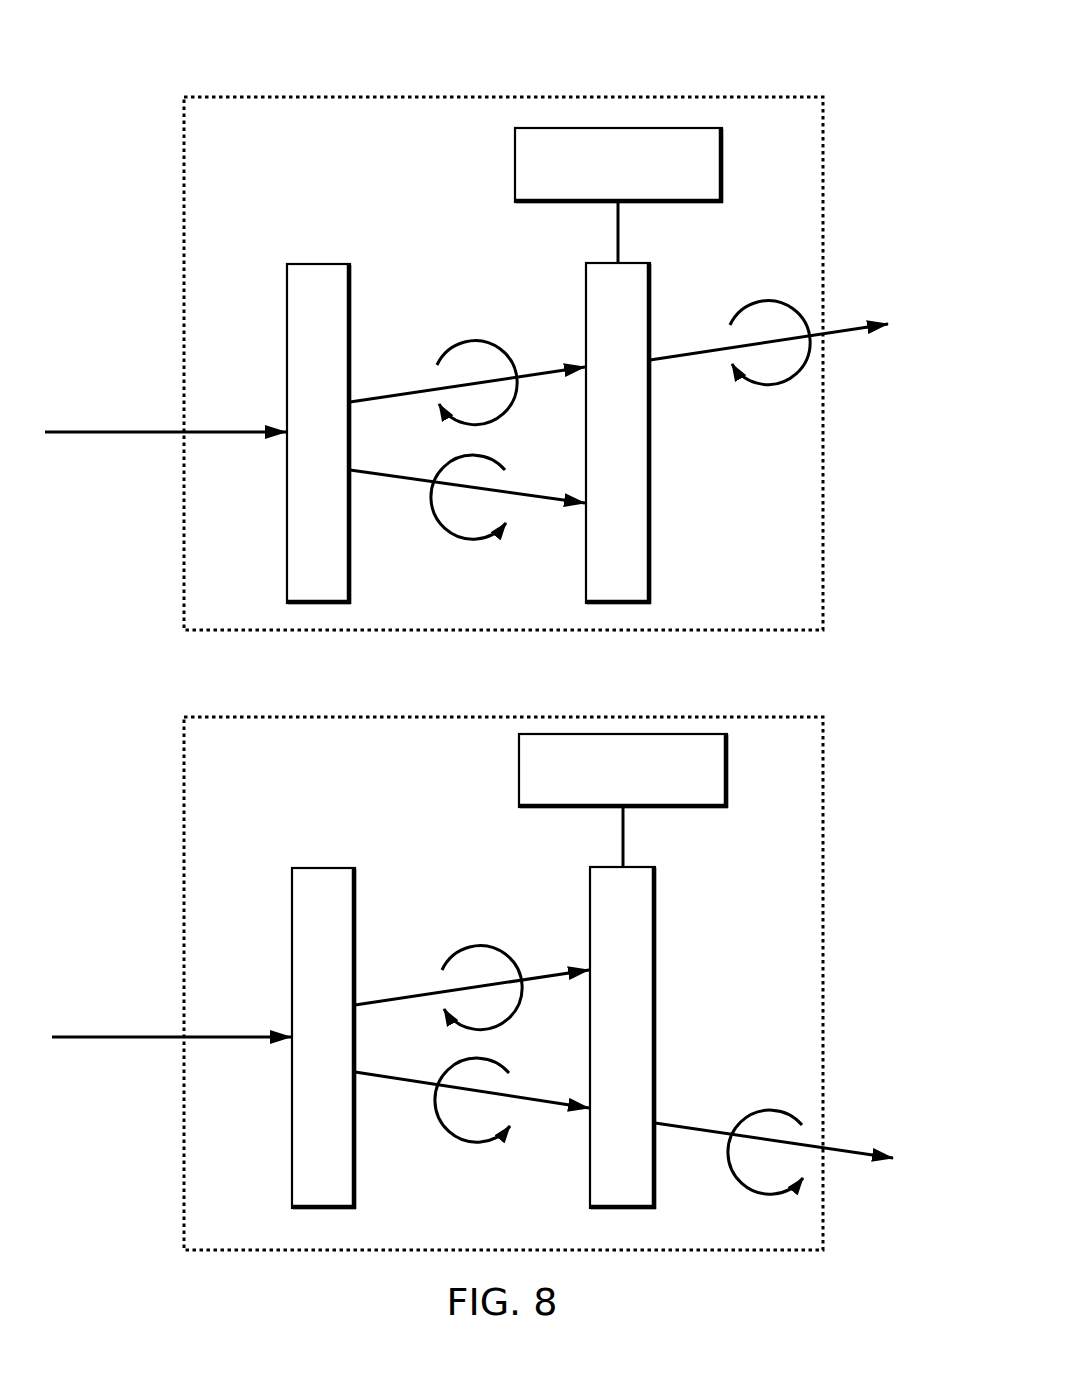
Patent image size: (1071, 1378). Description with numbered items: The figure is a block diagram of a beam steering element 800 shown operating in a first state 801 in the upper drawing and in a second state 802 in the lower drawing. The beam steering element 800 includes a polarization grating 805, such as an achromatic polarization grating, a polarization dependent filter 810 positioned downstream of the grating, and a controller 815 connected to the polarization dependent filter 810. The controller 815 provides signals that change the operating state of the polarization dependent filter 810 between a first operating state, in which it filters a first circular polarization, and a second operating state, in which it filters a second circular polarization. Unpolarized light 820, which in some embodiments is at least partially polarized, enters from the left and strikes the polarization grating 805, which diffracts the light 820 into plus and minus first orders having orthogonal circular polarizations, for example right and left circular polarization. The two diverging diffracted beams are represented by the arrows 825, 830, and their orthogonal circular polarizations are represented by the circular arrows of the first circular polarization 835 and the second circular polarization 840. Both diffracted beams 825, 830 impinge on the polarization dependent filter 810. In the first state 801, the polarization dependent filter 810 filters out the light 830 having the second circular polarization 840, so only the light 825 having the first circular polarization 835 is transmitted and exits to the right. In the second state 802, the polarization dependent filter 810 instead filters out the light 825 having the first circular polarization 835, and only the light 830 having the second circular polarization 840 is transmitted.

The beam steering element 800 is at (502, 630).
The first state 801 is at (850, 67).
The second state 802 is at (850, 707).
The polarization grating 805 is at (297, 446).
The polarization dependent filter 810 is at (597, 446).
The controller 815 is at (597, 189).
The unpolarized light 820 is at (112, 430).
The diffracted light 825 is at (412, 392).
The diffracted light 830 is at (405, 481).
The first circular polarization 835 is at (487, 341).
The second circular polarization 840 is at (460, 537).